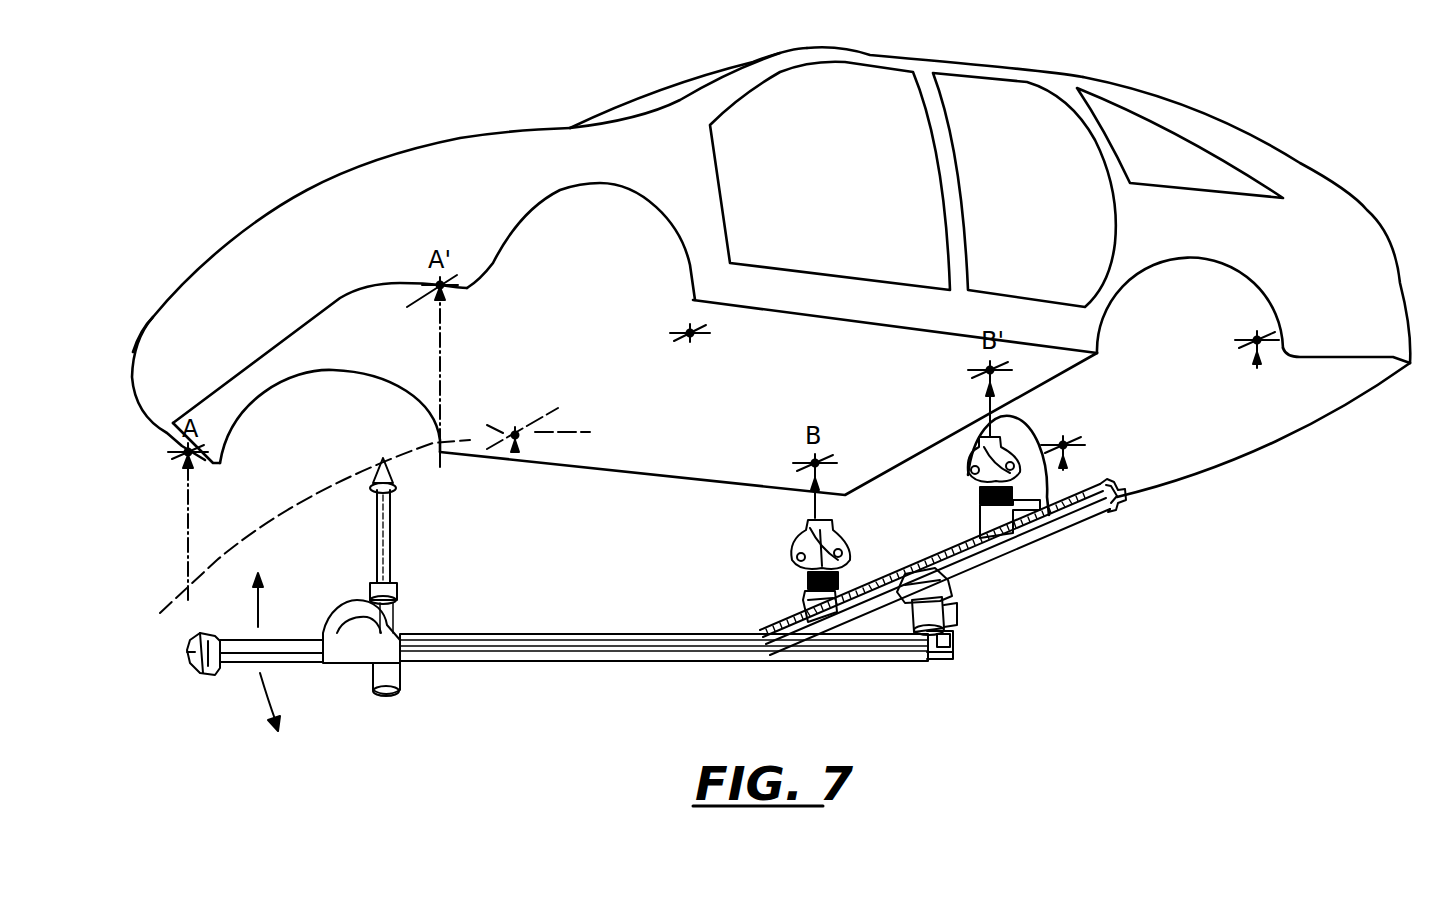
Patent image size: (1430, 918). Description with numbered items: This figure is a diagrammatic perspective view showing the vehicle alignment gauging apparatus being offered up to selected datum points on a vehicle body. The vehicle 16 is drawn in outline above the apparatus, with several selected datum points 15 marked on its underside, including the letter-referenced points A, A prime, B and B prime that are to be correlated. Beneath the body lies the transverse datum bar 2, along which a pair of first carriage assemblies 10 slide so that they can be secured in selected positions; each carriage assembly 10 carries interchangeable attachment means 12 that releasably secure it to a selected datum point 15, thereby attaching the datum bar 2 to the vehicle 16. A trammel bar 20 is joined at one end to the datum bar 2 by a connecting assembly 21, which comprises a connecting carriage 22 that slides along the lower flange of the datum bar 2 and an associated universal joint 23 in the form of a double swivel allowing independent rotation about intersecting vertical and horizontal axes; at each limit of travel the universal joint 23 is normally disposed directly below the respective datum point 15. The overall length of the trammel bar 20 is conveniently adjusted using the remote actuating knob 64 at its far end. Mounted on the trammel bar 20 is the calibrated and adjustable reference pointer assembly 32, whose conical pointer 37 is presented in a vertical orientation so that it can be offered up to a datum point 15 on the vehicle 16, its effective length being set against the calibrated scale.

The vehicle 16 is at (1297, 163).
The datum point 15 is at (1080, 440).
The interchangeable attachment means 12 is at (783, 540).
The first carriage assembly 10 is at (807, 605).
The transverse datum bar 2 is at (1083, 527).
The connecting carriage 22 is at (950, 587).
The connecting assembly 21 is at (950, 607).
The universal joint 23 is at (958, 620).
The trammel bar 20 is at (610, 657).
The reference pointer assembly 32 is at (417, 577).
The conical pointer 37 is at (377, 462).
The remote actuating knob 64 is at (190, 670).